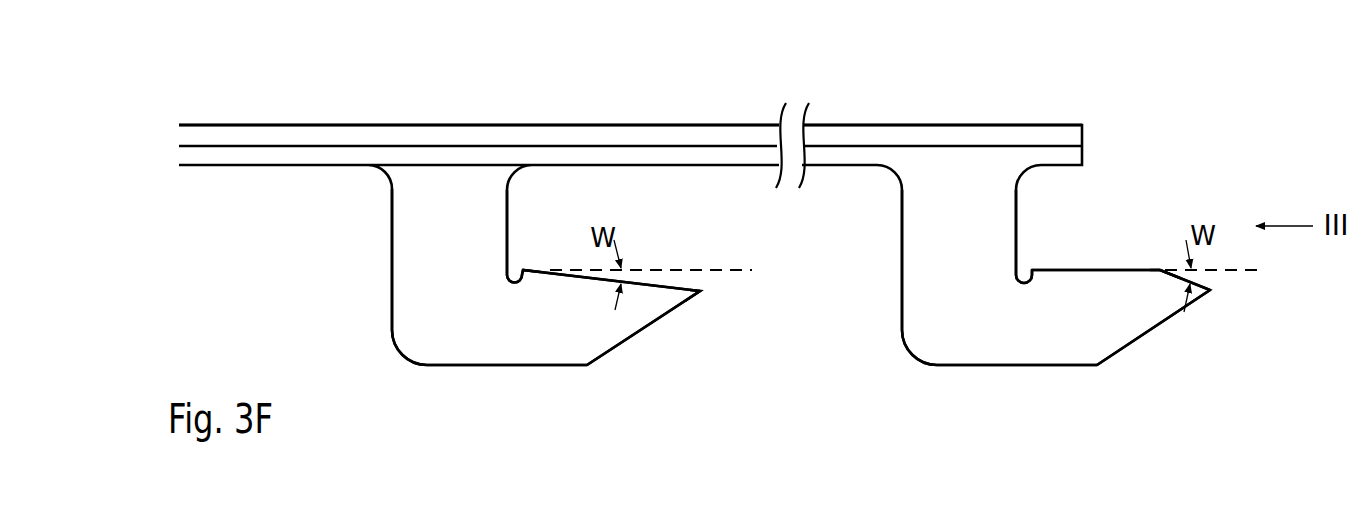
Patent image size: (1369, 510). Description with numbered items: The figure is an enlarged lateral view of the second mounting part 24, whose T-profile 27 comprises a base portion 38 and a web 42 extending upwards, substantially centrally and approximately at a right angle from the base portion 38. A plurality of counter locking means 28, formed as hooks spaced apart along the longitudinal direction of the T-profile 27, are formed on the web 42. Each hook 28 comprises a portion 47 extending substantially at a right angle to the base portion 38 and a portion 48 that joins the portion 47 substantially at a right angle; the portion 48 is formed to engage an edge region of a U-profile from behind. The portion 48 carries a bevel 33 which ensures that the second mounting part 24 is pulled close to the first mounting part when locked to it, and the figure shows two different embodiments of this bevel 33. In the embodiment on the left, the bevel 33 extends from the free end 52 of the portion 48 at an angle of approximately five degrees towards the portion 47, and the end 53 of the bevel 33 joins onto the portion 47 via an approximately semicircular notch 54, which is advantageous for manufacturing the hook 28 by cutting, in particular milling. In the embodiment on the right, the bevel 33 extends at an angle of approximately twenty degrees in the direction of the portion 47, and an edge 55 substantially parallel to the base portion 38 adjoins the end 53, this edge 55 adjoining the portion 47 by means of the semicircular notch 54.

The second mounting part 24 is at (176, 99).
The T-profile 27 is at (268, 119).
The base portion 38 is at (464, 135).
The web 42 is at (583, 156).
The portion 47 is at (405, 229).
The counter locking means 28 is at (447, 332).
The semicircular notch 54 is at (523, 283).
The portion 48 is at (557, 347).
The end 53 is at (527, 268).
The bevel 33 is at (680, 287).
The free end 52 is at (701, 293).
The edge 55 is at (1085, 268).